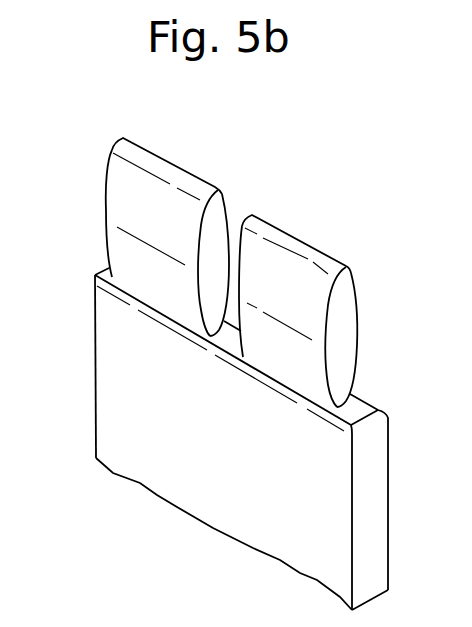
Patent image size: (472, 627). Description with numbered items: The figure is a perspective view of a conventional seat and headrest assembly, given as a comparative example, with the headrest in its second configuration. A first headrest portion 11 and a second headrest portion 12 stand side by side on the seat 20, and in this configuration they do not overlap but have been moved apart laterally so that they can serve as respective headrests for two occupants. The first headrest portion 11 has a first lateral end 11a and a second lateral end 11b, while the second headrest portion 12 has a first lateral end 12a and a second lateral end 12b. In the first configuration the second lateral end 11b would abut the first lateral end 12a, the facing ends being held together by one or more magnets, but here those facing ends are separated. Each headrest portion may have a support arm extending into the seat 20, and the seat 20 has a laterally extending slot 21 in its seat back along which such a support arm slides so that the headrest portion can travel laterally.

The first headrest portion 11 is at (134, 213).
The first lateral end of the first headrest portion 11a is at (105, 217).
The second lateral end of the first headrest portion 11b is at (213, 205).
The second headrest portion 12 is at (335, 275).
The first lateral end of the second headrest portion 12a is at (234, 233).
The second lateral end of the second headrest portion 12b is at (348, 330).
The seat 20 is at (204, 476).
The slot 21 is at (228, 340).